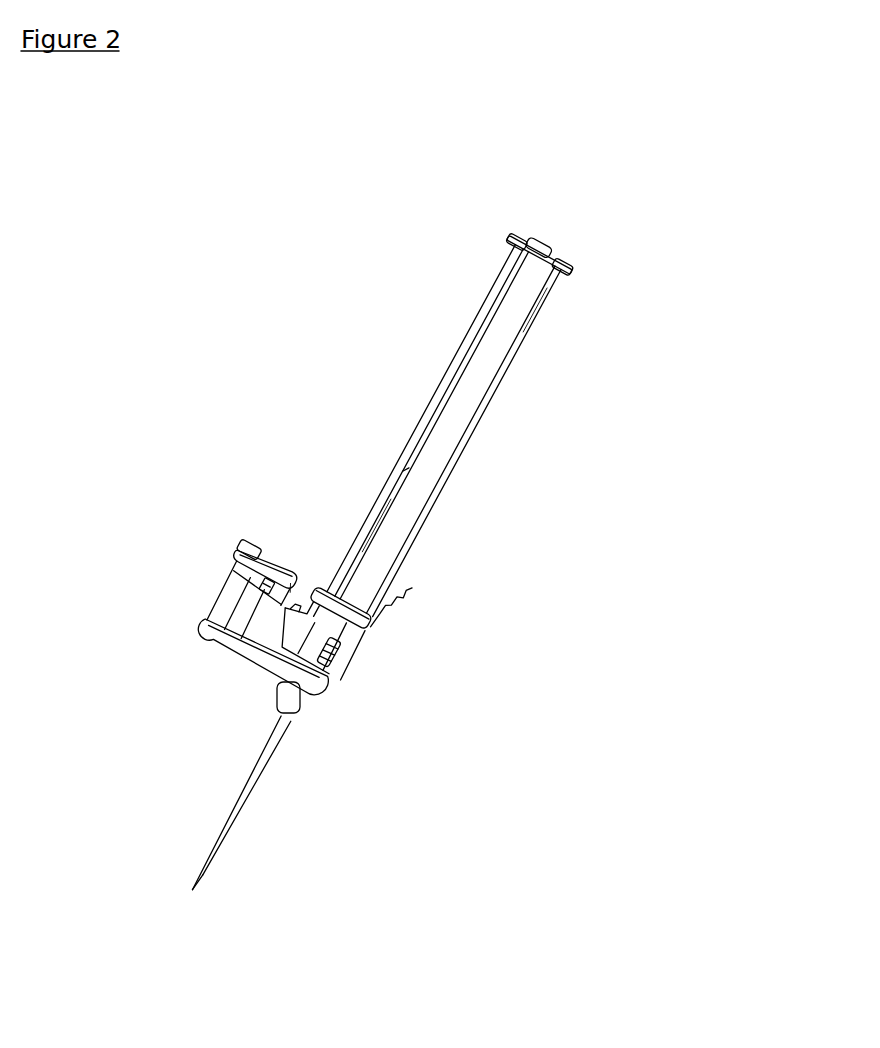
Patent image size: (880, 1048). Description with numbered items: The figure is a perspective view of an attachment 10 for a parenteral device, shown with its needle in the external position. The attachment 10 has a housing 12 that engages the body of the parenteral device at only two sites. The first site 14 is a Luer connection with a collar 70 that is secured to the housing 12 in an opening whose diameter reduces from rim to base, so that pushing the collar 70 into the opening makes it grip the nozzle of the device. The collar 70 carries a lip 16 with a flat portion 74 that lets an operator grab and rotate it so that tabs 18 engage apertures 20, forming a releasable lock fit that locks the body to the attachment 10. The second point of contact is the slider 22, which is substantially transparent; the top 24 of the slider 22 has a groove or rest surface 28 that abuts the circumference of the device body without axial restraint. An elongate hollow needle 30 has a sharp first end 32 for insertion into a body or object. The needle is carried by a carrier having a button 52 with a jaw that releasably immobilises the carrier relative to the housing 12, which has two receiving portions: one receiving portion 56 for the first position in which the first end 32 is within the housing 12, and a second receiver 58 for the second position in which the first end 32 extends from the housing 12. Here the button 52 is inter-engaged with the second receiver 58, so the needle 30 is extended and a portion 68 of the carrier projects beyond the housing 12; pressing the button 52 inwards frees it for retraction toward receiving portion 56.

The attachment 10 is at (399, 549).
The housing 12 is at (223, 635).
The first site 14 is at (155, 525).
The lip 16 is at (298, 549).
The tabs 18 is at (265, 586).
The apertures 20 is at (264, 588).
The slider 22 is at (433, 431).
The top of the slider 24 is at (623, 215).
The rest surface 28 is at (487, 217).
The elongate hollow needle 30 is at (252, 778).
The first end 32 is at (130, 907).
The button 52 is at (437, 598).
The receiving portion 56 is at (576, 309).
The second receiver 58 is at (383, 567).
The portion of the carrier 68 is at (322, 710).
The collar 70 is at (249, 512).
The flat portion 74 is at (274, 558).